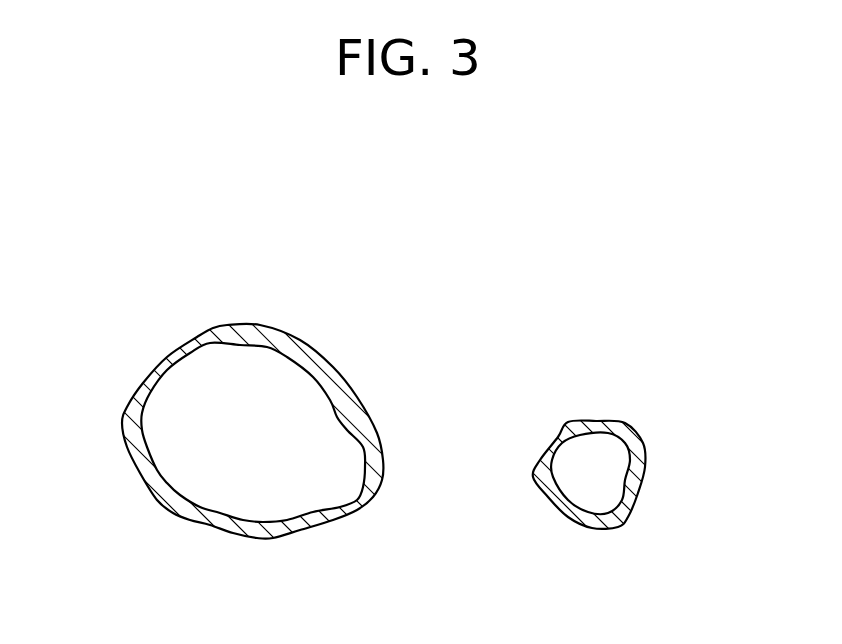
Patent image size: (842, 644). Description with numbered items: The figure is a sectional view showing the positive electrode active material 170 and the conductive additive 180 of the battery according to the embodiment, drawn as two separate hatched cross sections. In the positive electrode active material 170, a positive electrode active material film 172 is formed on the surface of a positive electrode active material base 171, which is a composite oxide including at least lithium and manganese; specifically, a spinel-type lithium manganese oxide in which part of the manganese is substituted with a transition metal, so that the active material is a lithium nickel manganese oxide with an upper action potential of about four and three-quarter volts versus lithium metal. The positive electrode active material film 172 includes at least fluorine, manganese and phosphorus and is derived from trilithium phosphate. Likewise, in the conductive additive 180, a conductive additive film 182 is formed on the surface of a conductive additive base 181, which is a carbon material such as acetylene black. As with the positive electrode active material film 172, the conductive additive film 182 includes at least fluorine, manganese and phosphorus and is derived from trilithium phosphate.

The positive electrode active material 170 is at (299, 427).
The positive electrode active material base 171 is at (273, 493).
The positive electrode active material film 172 is at (182, 515).
The conductive additive 180 is at (577, 466).
The conductive additive base 181 is at (605, 475).
The conductive additive film 182 is at (603, 527).